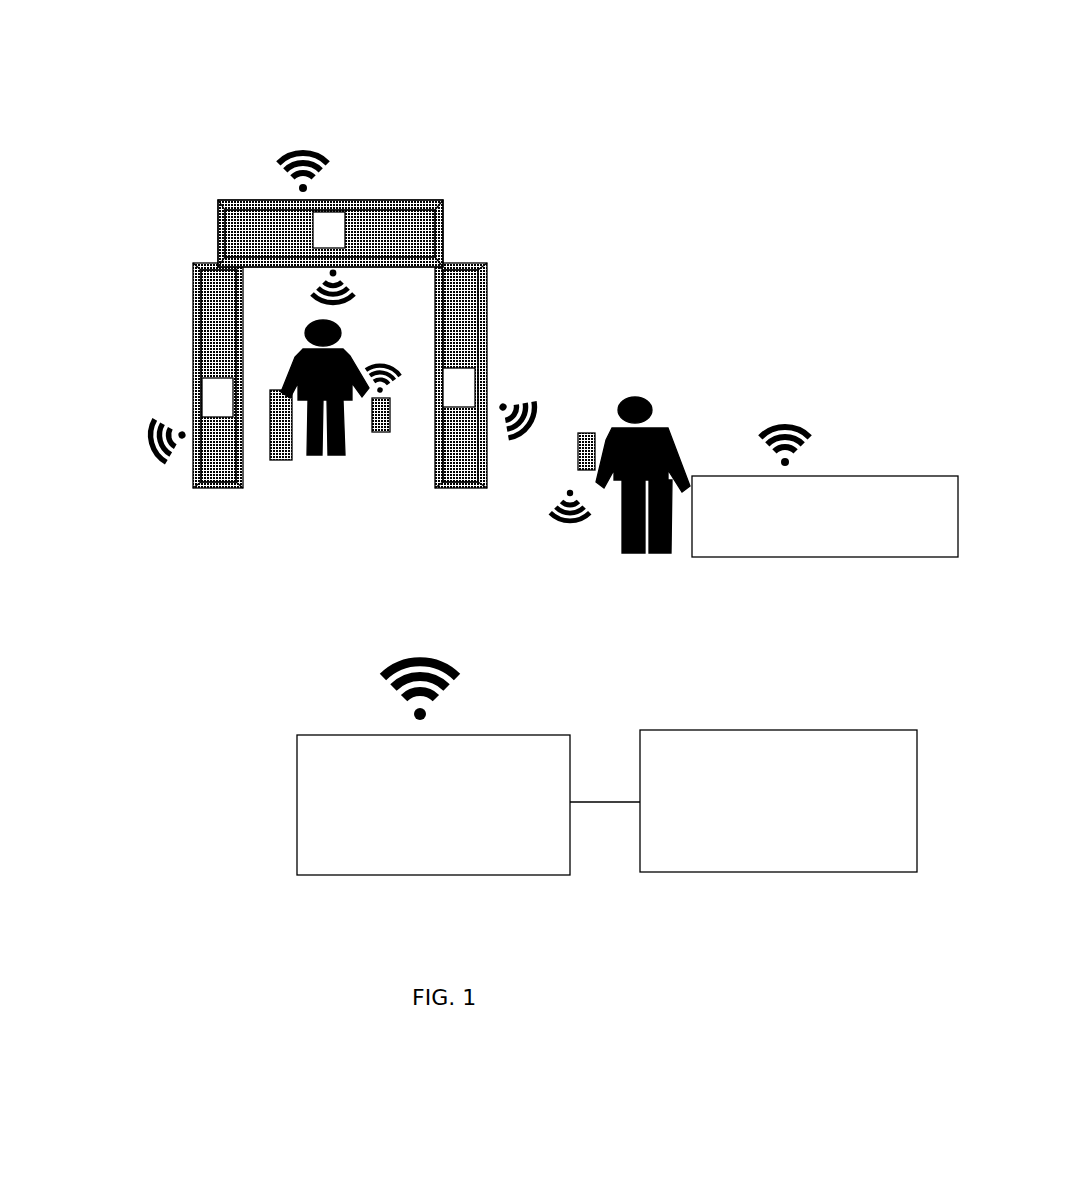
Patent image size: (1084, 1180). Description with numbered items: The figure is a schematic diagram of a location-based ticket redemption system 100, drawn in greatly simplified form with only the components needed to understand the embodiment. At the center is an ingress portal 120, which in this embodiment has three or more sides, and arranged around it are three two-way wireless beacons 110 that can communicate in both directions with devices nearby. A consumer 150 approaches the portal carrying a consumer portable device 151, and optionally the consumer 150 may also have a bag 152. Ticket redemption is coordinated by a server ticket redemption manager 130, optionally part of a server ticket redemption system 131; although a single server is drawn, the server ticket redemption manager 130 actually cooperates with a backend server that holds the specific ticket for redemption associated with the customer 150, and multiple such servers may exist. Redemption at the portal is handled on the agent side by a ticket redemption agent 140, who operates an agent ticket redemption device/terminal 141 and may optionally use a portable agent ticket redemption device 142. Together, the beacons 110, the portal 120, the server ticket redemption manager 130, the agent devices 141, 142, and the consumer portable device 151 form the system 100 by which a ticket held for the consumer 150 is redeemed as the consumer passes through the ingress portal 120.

The location-based ticket redemption system 100 is at (670, 106).
The two-way wireless beacon 110 is at (335, 218).
The ingress portal 120 is at (240, 207).
The server ticket redemption manager 130 is at (433, 805).
The server ticket redemption system 131 is at (778, 801).
The ticket redemption agent 140 is at (635, 378).
The agent ticket redemption device/terminal 141 is at (803, 557).
The portable agent ticket redemption device 142 is at (580, 472).
The consumer 150 is at (322, 455).
The consumer portable device 151 is at (362, 425).
The bag 152 is at (287, 460).